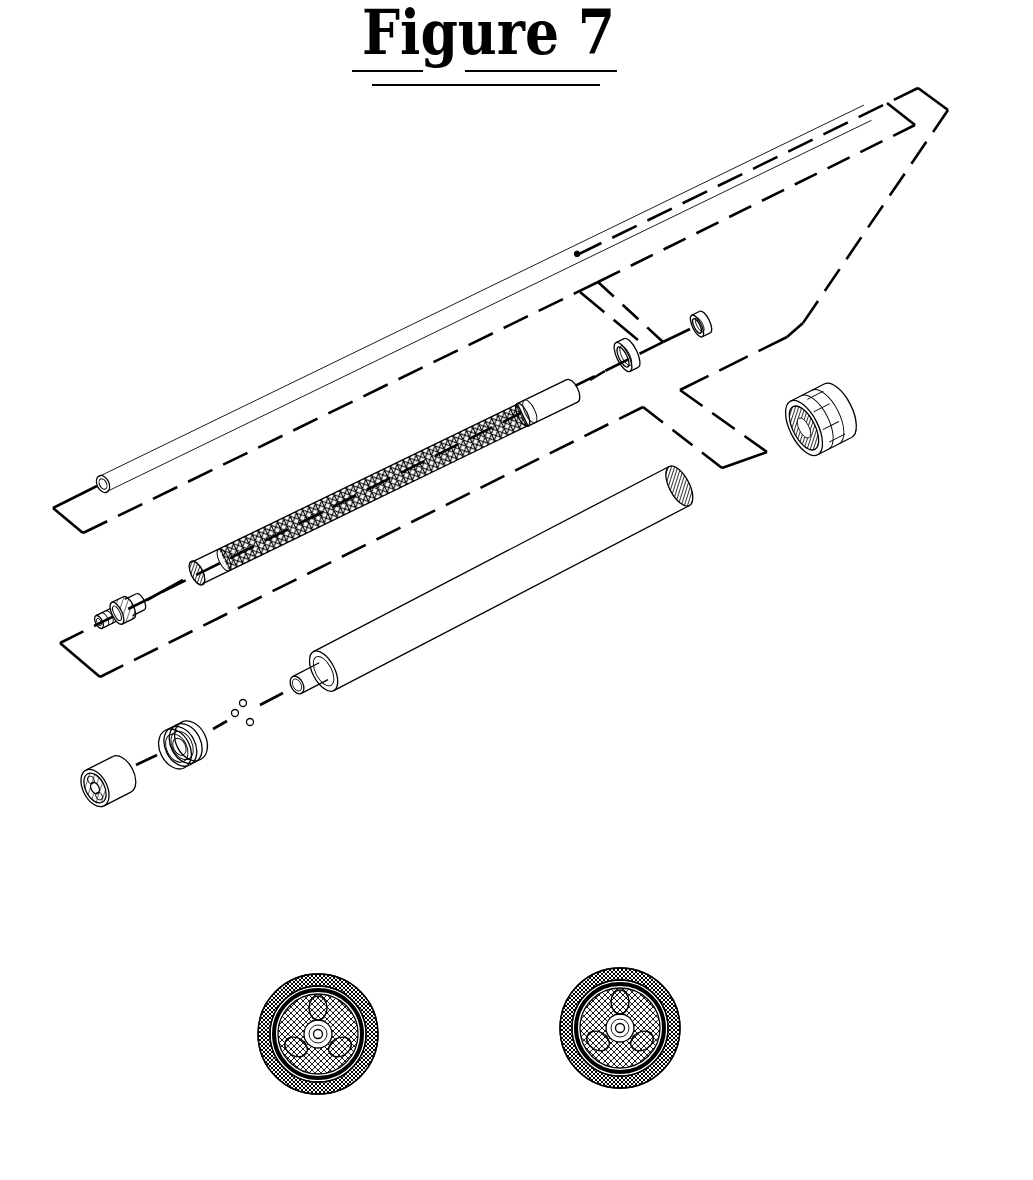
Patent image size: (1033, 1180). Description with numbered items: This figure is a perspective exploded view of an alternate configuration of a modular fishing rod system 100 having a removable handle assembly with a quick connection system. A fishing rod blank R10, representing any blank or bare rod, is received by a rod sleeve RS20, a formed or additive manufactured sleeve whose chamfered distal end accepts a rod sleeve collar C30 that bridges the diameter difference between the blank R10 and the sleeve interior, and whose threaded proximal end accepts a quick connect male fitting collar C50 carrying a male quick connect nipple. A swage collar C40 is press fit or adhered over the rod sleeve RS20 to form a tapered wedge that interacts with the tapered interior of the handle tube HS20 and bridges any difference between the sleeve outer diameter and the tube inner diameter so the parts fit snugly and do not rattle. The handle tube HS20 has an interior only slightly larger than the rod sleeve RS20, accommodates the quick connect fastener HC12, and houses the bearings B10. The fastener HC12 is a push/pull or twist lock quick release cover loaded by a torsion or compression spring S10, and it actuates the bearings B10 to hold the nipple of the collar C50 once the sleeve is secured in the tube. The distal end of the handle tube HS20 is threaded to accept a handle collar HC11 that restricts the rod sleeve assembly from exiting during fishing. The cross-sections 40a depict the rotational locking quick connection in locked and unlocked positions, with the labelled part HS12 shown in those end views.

The modular fishing rod system 100 is at (425, 275).
The fishing rod blank R10 is at (185, 418).
The rod sleeve RS20 is at (333, 480).
The swage collar C40 is at (598, 358).
The rod sleeve collar C30 is at (716, 307).
The handle collar HC11 is at (835, 464).
The quick connect male fitting collar C50 is at (96, 602).
The handle tube HS20 is at (552, 600).
The bearings B10 is at (262, 733).
The spring S10 is at (195, 775).
The quick connect fastener HC12 is at (98, 825).
The cross-sections 40a is at (468, 937).
The housing disc HS12 is at (317, 1093).